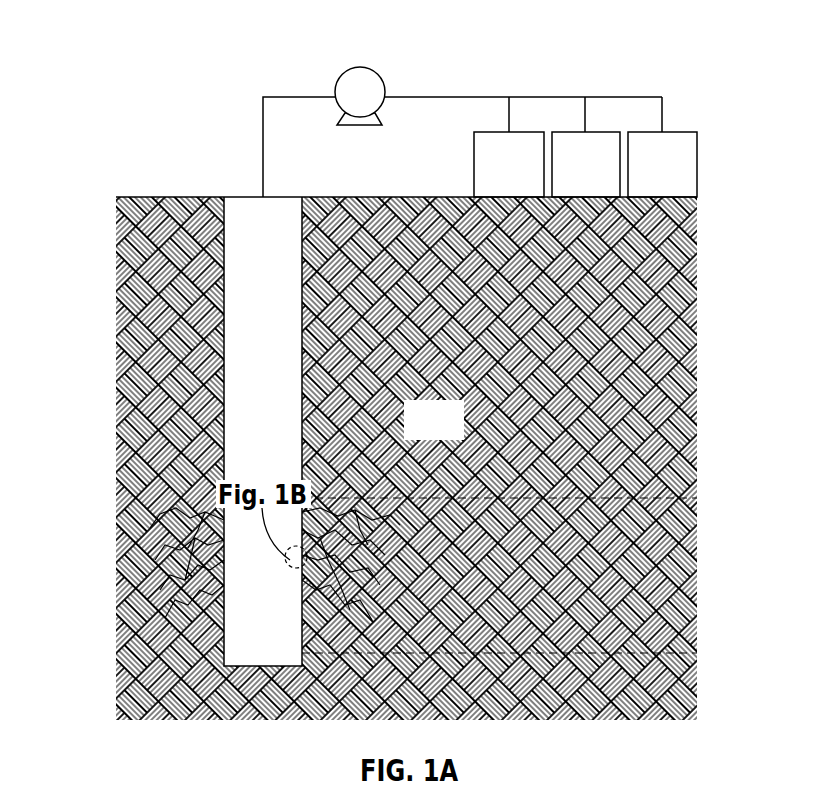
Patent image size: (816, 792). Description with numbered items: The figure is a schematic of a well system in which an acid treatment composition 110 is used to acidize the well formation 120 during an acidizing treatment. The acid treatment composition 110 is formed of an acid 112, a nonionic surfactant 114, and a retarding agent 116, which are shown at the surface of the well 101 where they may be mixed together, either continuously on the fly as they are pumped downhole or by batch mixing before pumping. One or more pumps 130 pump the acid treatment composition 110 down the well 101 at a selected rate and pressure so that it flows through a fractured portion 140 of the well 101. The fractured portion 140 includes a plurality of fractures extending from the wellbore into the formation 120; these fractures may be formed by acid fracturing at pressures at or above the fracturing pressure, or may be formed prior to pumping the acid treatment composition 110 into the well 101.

The well 101 is at (232, 197).
The acid treatment composition 110 is at (369, 319).
The acid 112 is at (530, 178).
The nonionic surfactant 114 is at (606, 178).
The retarding agent 116 is at (683, 178).
The well formation 120 is at (455, 436).
The pump 130 is at (363, 78).
The fractured portion 140 is at (705, 498).